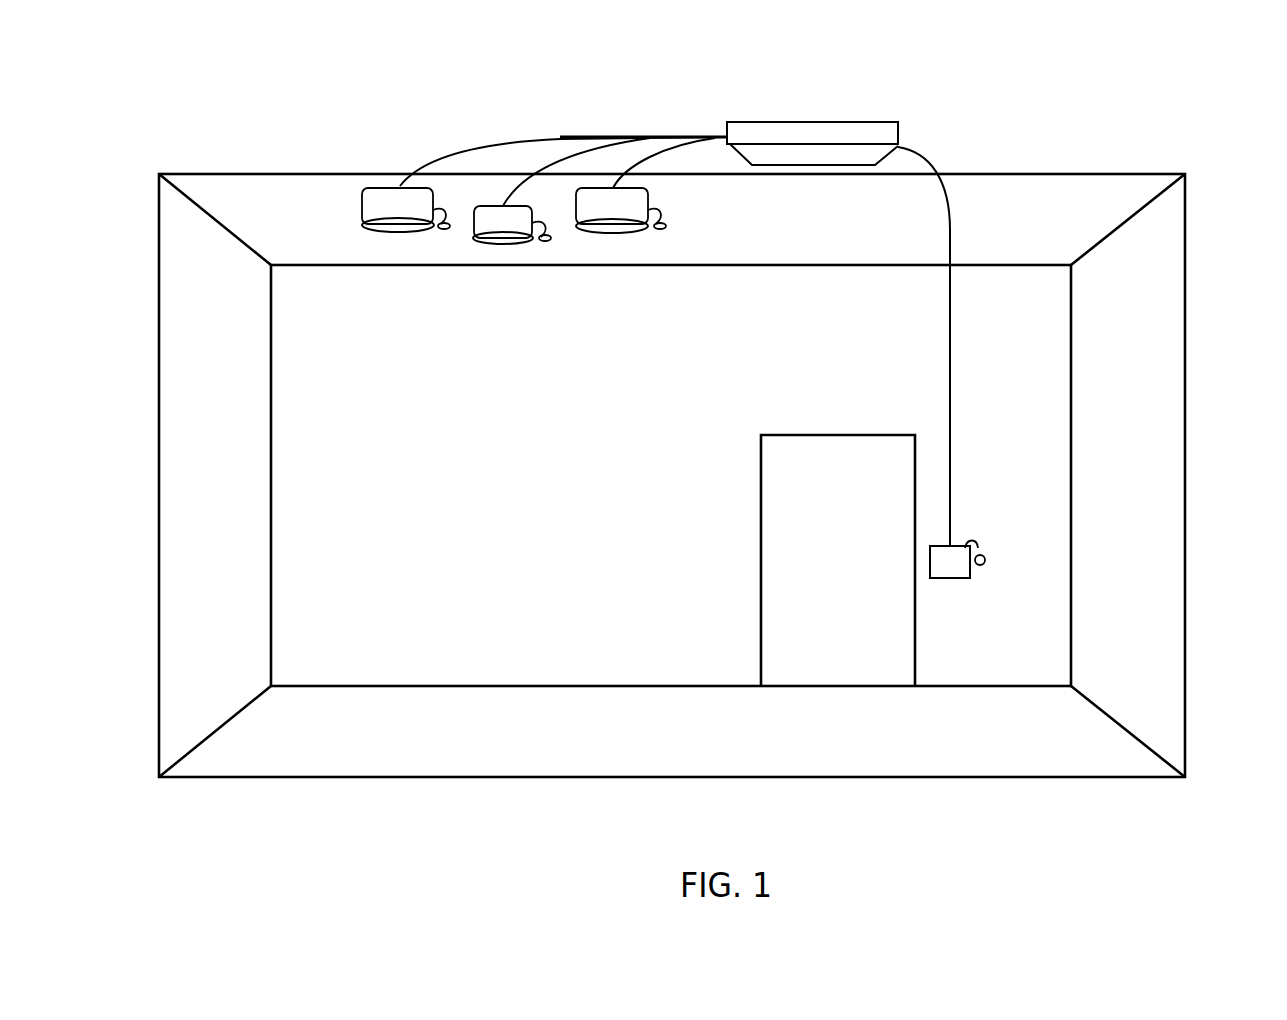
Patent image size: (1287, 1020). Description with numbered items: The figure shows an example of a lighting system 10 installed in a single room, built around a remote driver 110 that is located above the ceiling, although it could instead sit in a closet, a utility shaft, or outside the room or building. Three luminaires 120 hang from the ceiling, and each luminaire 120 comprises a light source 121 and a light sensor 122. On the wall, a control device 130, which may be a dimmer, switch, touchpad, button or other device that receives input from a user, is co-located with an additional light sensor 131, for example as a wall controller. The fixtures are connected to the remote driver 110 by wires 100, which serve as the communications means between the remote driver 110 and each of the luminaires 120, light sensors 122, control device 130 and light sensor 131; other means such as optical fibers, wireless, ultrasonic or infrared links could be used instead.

The lighting system 10 is at (1074, 124).
The wires 100 is at (935, 186).
The remote driver 110 is at (827, 128).
The luminaire 120 is at (575, 200).
The light source 121 is at (612, 227).
The light sensor 122 is at (660, 227).
The control device 130 is at (950, 568).
The light sensor 131 is at (986, 555).